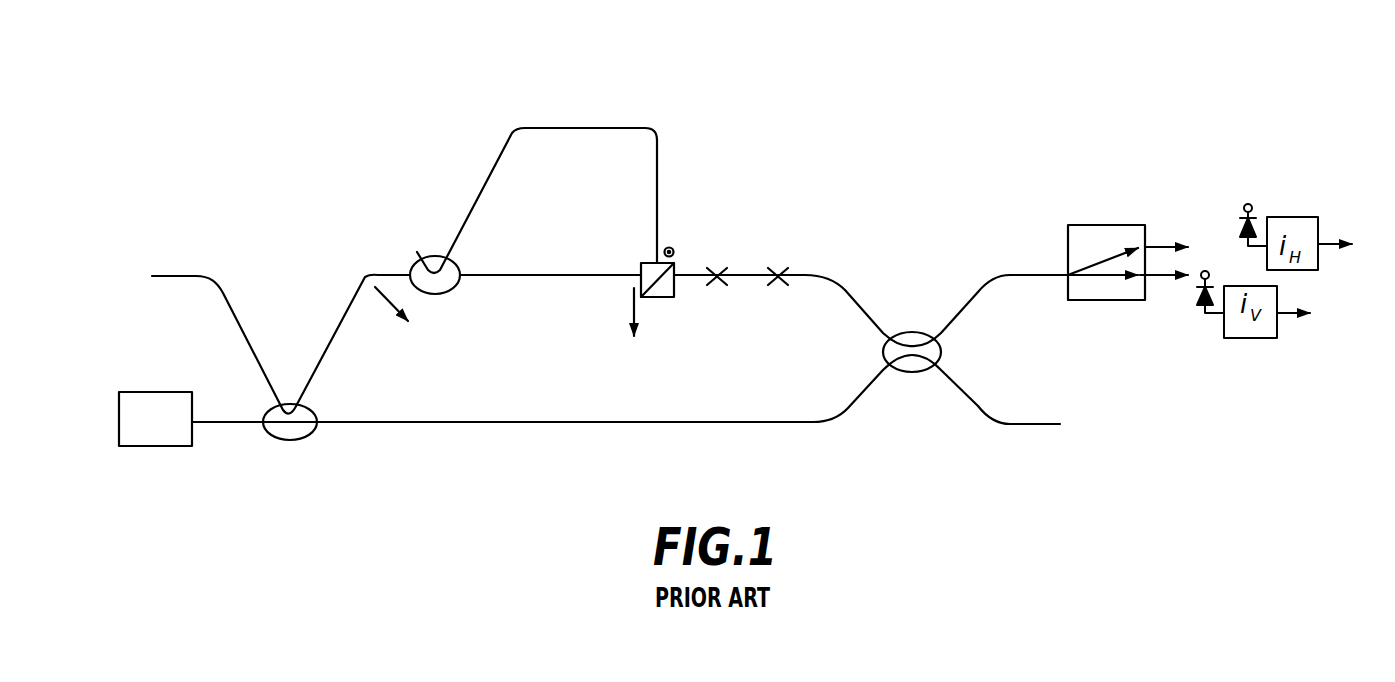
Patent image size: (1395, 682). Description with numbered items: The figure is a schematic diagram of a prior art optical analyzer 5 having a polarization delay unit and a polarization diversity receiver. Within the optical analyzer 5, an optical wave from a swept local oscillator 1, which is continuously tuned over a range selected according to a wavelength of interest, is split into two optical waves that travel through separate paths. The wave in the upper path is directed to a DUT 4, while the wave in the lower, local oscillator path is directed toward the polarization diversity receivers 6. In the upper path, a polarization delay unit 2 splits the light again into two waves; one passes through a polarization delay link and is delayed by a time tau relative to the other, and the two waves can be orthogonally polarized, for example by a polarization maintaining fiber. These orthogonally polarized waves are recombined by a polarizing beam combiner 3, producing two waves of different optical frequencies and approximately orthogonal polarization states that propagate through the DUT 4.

The swept local oscillator 1 is at (118, 403).
The polarization delay unit 2 is at (571, 110).
The polarizing beam combiner 3 is at (677, 263).
The DUT 4 is at (748, 238).
The optical analyzer 5 is at (764, 114).
The polarization diversity receivers 6 is at (1096, 194).